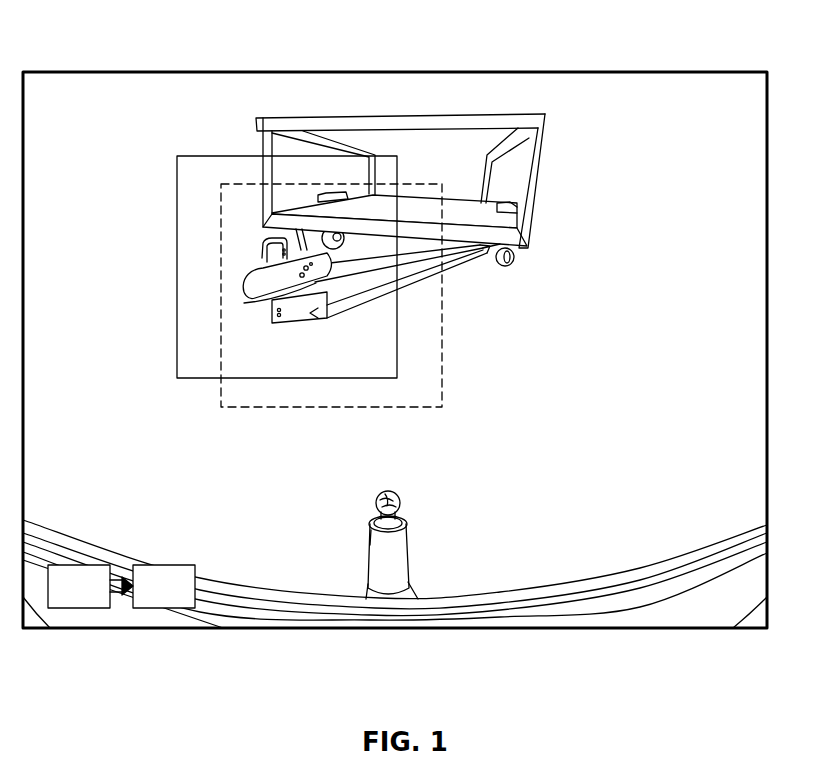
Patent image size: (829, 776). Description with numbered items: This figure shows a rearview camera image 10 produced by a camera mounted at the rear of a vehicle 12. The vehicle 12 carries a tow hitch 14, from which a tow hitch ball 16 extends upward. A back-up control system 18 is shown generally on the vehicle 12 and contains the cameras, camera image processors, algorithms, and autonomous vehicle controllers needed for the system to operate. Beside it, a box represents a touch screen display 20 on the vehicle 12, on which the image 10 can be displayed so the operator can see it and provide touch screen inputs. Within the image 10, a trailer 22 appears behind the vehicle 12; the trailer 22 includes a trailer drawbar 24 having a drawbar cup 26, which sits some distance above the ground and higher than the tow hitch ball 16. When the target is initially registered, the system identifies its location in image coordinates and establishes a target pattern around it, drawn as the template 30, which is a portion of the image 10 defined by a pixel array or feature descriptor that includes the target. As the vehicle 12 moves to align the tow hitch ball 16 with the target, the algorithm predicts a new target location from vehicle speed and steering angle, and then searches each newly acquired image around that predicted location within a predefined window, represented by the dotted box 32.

The rearview camera image 10 is at (707, 57).
The vehicle 12 is at (748, 587).
The tow hitch 14 is at (400, 547).
The tow hitch ball 16 is at (394, 493).
The back-up control system 18 is at (72, 609).
The touch screen display 20 is at (155, 609).
The trailer 22 is at (545, 156).
The trailer drawbar 24 is at (468, 262).
The drawbar cup 26 is at (256, 281).
The template 30 is at (217, 155).
The dotted box 32 is at (265, 409).